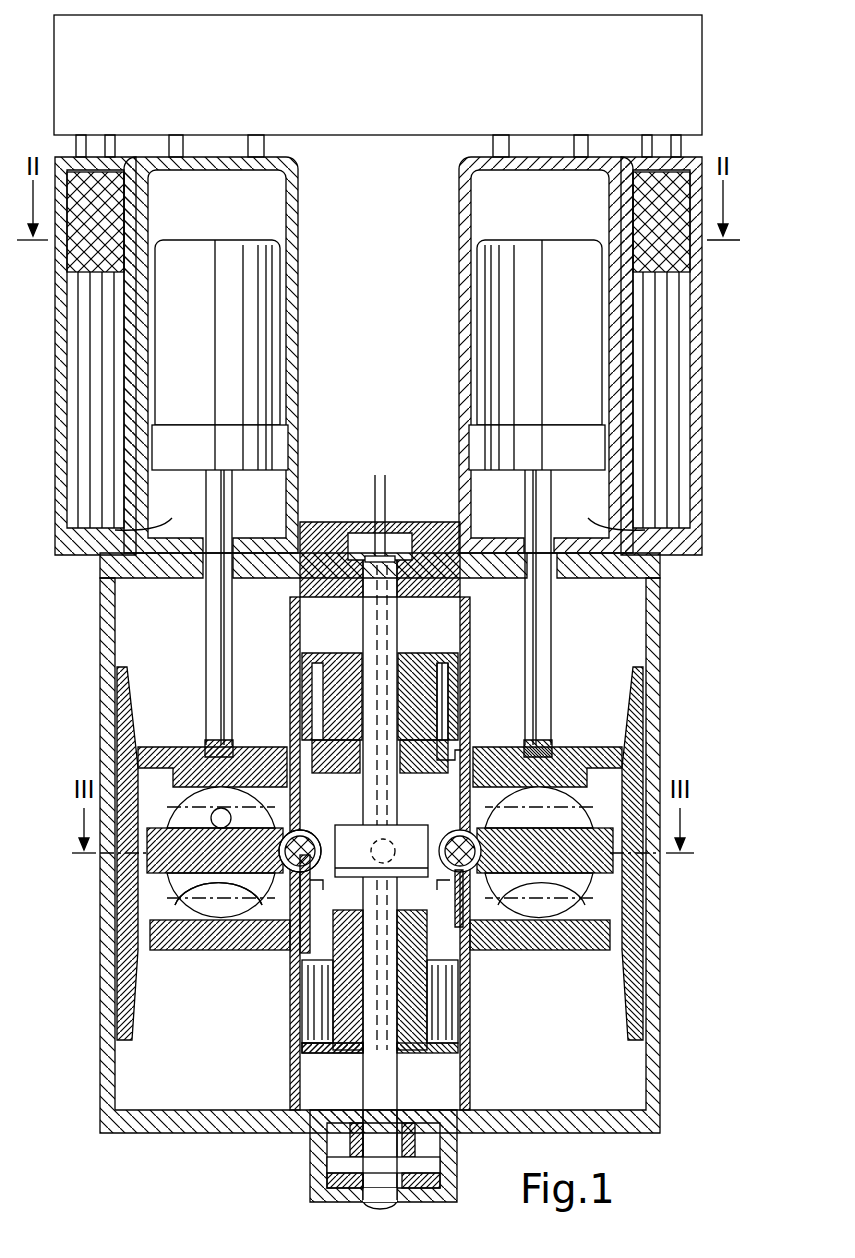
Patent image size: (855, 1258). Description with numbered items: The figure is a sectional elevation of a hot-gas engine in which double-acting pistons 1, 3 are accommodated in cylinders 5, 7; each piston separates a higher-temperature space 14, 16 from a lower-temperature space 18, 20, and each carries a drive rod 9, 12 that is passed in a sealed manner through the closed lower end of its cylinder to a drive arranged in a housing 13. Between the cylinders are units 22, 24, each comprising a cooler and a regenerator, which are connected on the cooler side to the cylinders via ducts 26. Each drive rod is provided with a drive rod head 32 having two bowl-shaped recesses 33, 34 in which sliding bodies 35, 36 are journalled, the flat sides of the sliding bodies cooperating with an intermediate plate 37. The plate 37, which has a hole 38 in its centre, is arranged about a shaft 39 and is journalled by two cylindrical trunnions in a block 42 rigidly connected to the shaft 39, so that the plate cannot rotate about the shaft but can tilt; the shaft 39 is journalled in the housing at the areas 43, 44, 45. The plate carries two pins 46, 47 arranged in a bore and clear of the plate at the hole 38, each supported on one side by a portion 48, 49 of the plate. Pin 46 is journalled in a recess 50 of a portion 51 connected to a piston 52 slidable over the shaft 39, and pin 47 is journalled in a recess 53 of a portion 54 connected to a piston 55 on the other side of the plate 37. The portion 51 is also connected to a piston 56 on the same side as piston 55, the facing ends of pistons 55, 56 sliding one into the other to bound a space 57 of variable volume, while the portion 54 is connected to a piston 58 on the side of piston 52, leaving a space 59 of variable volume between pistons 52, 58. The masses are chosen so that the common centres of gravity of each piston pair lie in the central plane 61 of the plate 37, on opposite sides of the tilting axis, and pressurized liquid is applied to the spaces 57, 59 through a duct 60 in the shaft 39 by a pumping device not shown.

The double-acting piston 1 is at (252, 325).
The double-acting piston 3 is at (495, 310).
The cylinder 5 is at (292, 387).
The cylinder 7 is at (465, 385).
The drive rod 9 is at (215, 597).
The drive rod 12 is at (545, 583).
The housing 13 is at (108, 645).
The higher-temperature space 14 is at (227, 213).
The higher-temperature space 16 is at (544, 213).
The lower-temperature space 18 is at (268, 510).
The lower-temperature space 20 is at (511, 510).
The cooler and regenerator unit 22 is at (66, 497).
The cooler and regenerator unit 24 is at (697, 430).
The duct 26 is at (380, 514).
The drive rod head 32 is at (126, 718).
The bowl-shaped recess 33 is at (214, 812).
The bowl-shaped recess 34 is at (220, 915).
The sliding body 35 is at (195, 787).
The sliding body 36 is at (175, 887).
The intermediate plate 37 is at (150, 855).
The hole 38 is at (266, 882).
The shaft 39 is at (380, 1183).
The block 42 is at (403, 848).
The journalling area 43 is at (395, 568).
The journalling area 44 is at (406, 1140).
The journalling area 45 is at (441, 1178).
The pin 46 is at (468, 846).
The pin 47 is at (307, 845).
The plate portion 48 is at (473, 898).
The plate portion 49 is at (292, 840).
The recess 50 is at (437, 848).
The portion 51 is at (458, 912).
The piston 52 is at (456, 1048).
The recess 53 is at (315, 882).
The portion 54 is at (305, 885).
The piston 55 is at (450, 665).
The piston 56 is at (446, 752).
The variable-volume space 57 is at (410, 665).
The piston 58 is at (300, 965).
The variable-volume space 59 is at (352, 1046).
The duct 60 is at (378, 620).
The central plane 61 is at (580, 852).